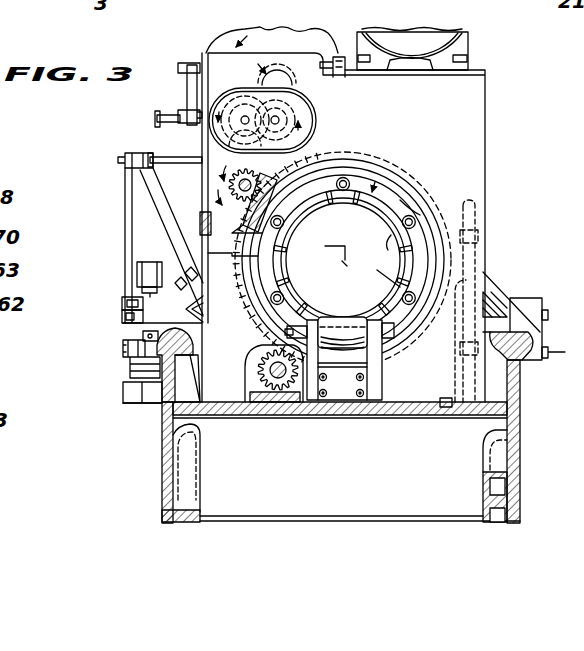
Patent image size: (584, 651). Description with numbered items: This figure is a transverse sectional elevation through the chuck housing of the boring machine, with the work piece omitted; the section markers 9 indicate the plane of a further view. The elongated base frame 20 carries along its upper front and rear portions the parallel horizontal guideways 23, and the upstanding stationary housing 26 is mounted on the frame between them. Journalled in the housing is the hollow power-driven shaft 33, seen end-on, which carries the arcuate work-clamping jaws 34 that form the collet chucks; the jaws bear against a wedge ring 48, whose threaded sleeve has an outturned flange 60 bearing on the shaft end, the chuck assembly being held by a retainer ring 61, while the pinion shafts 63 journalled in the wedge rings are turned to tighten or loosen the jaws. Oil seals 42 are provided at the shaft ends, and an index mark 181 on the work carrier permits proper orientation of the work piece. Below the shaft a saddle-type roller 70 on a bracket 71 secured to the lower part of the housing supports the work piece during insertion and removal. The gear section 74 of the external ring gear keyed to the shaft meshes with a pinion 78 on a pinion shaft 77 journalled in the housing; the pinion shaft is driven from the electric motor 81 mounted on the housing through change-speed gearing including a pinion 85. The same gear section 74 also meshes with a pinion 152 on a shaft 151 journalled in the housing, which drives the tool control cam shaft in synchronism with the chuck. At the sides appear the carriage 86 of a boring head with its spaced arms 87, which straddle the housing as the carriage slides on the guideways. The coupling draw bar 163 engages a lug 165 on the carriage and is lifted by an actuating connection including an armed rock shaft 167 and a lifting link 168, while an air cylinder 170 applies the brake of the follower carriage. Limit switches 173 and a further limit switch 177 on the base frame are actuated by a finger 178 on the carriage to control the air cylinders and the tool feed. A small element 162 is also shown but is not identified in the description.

The section line 9- 9 is at (245, 97).
The base frame 20 is at (162, 493).
The guideways 23 is at (143, 334).
The stationary housing 26 is at (485, 112).
The hollow power-driven shaft 33 is at (343, 260).
The work-clamping jaws 34 is at (402, 258).
The oil seals 42 is at (363, 150).
The wedge ring 48 is at (424, 190).
The outturned flange 60 is at (362, 158).
The retainer ring 61 is at (404, 155).
The pinion shafts 63 is at (436, 206).
The saddle-type roller 70 is at (383, 358).
The bracket 71 is at (382, 381).
The gear section 74 is at (235, 205).
The pinion shaft 77 is at (228, 163).
The pinion 78 is at (232, 182).
The electric motor 81 is at (470, 42).
The pinion 85 is at (362, 162).
The carriage 86 is at (498, 272).
The spaced arms 87 is at (512, 322).
The shaft 151 is at (278, 380).
The pinion 152 is at (250, 408).
The adjusting bolt 162 is at (546, 318).
The draw bar 163 is at (125, 302).
The lug 165 is at (125, 323).
The armed rock shaft 167 is at (163, 156).
The lifting link 168 is at (128, 207).
The air cylinder 170 is at (150, 267).
The limit switches 173 is at (128, 407).
The limit switch 177 is at (125, 393).
The finger 178 is at (123, 360).
The index mark 181 is at (412, 178).